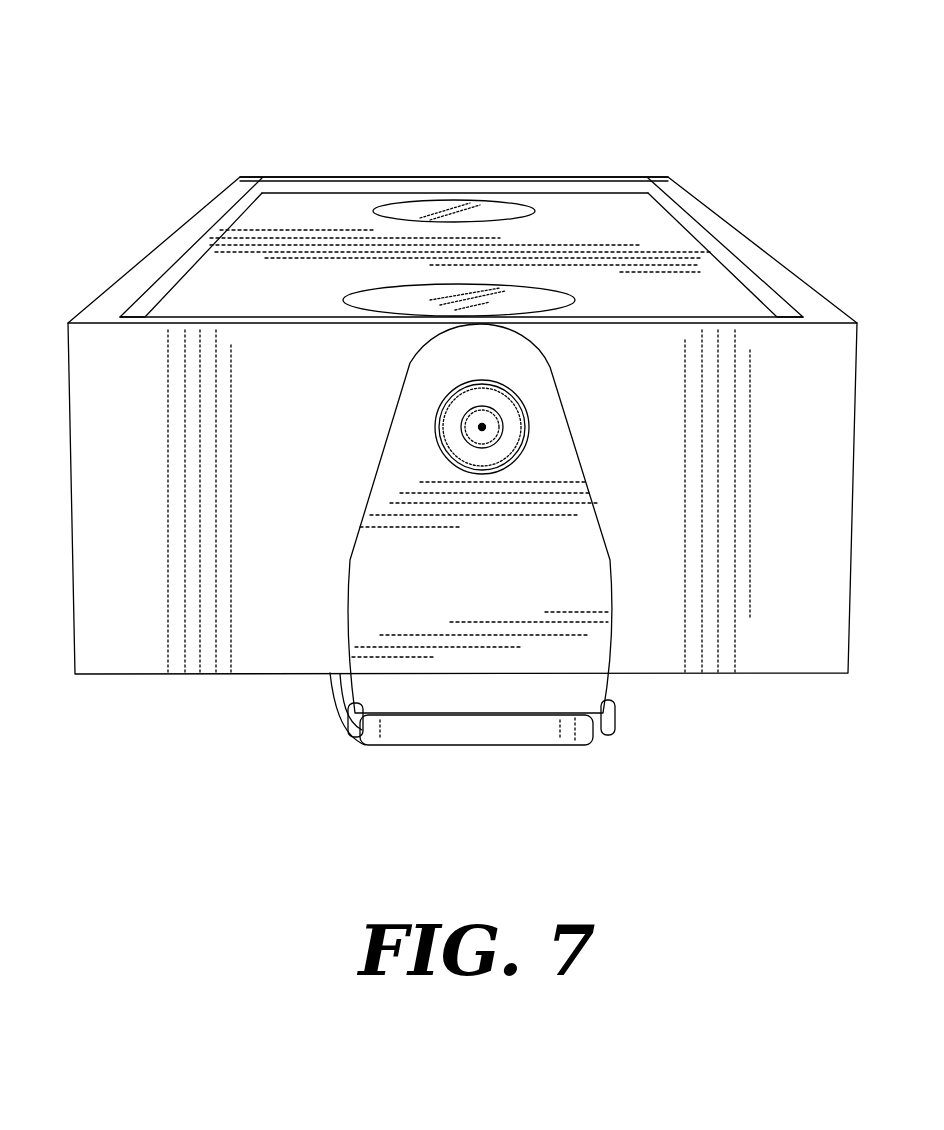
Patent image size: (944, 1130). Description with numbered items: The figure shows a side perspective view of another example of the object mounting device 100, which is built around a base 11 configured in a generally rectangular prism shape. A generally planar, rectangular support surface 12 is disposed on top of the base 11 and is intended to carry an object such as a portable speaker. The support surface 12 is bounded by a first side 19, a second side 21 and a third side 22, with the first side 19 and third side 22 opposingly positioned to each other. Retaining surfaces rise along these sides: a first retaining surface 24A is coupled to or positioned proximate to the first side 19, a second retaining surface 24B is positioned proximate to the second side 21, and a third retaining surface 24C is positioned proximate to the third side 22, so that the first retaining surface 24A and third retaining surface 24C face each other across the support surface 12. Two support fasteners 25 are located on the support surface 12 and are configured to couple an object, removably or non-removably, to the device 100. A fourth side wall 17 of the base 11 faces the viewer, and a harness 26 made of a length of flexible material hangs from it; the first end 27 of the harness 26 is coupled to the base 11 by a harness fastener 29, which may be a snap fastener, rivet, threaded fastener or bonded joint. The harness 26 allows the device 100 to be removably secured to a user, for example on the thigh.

The object mounting device 100 is at (306, 80).
The base 11 is at (68, 322).
The support surface 12 is at (608, 213).
The fourth side wall 17 is at (653, 612).
The first side 19 is at (207, 255).
The second side 21 is at (552, 197).
The third side 22 is at (692, 242).
The first retaining surface 24A is at (186, 266).
The second retaining surface 24B is at (350, 190).
The third retaining surface 24C is at (718, 266).
The support fastener 25 is at (473, 212).
The harness 26 is at (505, 718).
The first end 27 is at (381, 421).
The harness fastener 29 is at (485, 426).